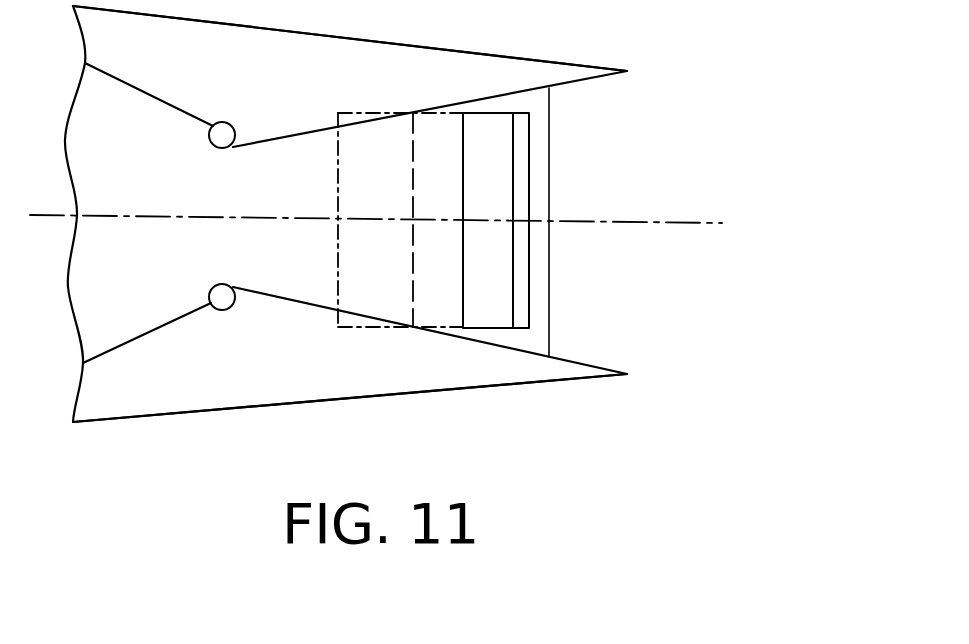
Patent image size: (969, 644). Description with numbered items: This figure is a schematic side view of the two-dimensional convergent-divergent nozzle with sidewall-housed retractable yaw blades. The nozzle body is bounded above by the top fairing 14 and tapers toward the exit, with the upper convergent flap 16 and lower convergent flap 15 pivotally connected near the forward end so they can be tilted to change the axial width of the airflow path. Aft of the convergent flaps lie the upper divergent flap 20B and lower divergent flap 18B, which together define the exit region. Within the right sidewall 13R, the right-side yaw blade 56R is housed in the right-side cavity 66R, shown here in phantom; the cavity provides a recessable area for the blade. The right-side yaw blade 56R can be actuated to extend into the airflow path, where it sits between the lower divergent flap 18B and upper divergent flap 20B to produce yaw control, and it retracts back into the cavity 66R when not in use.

The top fairing 14 is at (395, 42).
The upper divergent flap 20B is at (268, 95).
The upper convergent flap 16 is at (158, 115).
The lower convergent flap 15 is at (150, 322).
The lower divergent flap 18B is at (545, 375).
The right-side cavity 66R is at (358, 273).
The right-side yaw blade 56R is at (515, 293).
The right sidewall 13R is at (549, 195).